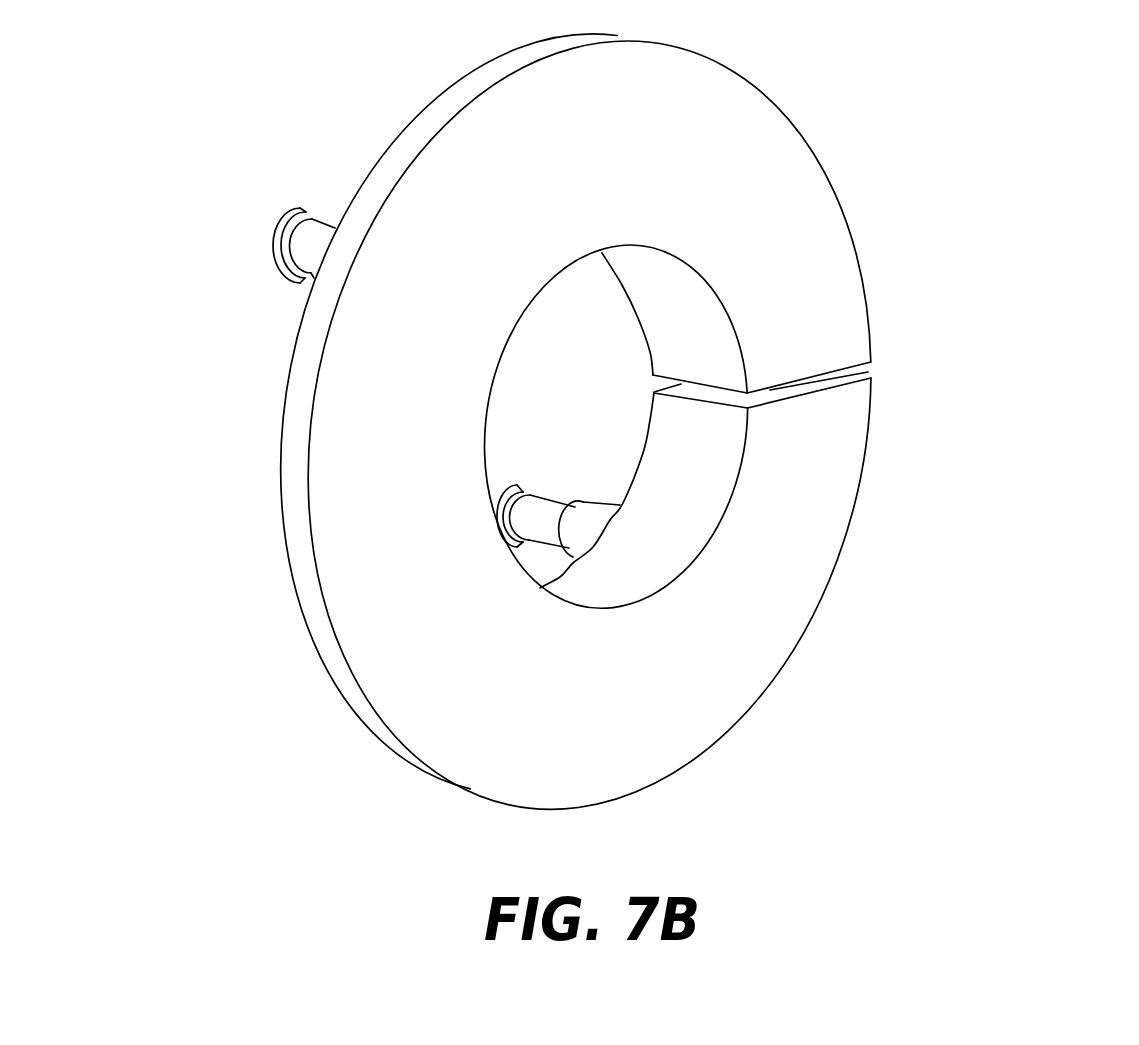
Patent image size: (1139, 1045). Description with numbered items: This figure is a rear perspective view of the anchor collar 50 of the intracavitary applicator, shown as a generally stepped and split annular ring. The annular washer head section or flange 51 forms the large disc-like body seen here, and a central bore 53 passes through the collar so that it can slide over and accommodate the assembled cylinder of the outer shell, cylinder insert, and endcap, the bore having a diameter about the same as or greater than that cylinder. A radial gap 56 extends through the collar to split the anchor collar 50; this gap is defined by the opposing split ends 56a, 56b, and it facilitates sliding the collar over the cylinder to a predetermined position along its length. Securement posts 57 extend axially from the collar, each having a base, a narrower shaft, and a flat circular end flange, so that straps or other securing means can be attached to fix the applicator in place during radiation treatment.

The anchor collar 50 is at (1006, 104).
The washer head section 51 is at (748, 680).
The central bore 53 is at (508, 398).
The radial gap 56 is at (844, 357).
The split end 56a is at (820, 384).
The split end 56b is at (870, 375).
The securement post 57 is at (262, 281).